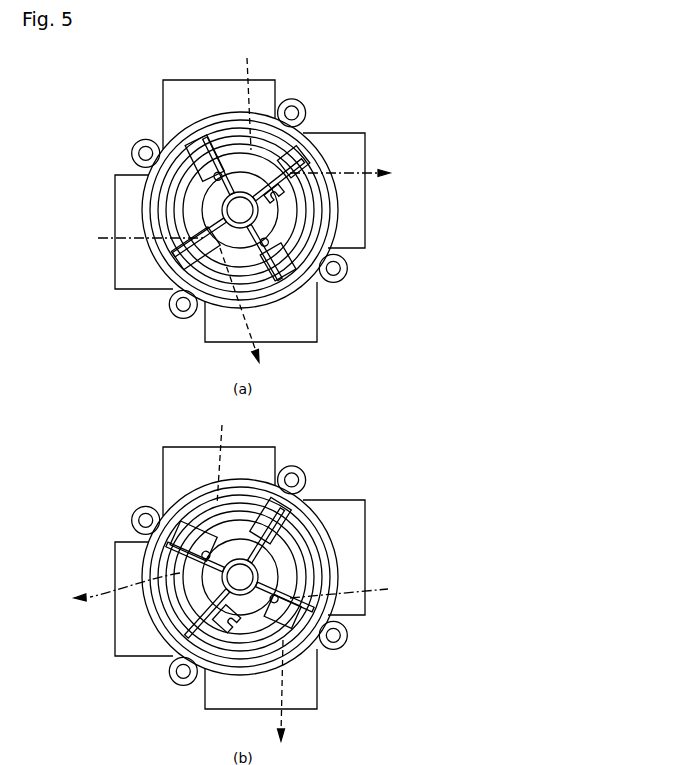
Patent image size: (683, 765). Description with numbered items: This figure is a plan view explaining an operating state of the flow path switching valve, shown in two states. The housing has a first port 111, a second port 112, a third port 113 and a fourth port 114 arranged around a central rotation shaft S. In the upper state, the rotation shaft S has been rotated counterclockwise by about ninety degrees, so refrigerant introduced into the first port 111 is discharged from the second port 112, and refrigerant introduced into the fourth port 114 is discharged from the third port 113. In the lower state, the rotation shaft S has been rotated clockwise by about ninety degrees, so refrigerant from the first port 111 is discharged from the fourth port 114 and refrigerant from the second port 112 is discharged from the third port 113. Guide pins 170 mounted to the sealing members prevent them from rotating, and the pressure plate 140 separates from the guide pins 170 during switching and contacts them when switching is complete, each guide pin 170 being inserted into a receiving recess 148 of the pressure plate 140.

The first port 111 is at (277, 85).
The second port 112 is at (345, 133).
The third port 113 is at (318, 312).
The fourth port 114 is at (118, 175).
The pressure plate 140 is at (220, 206).
The receiving recess 148 is at (200, 232).
The guide pin 170 is at (214, 179).
The rotation shaft S is at (242, 212).